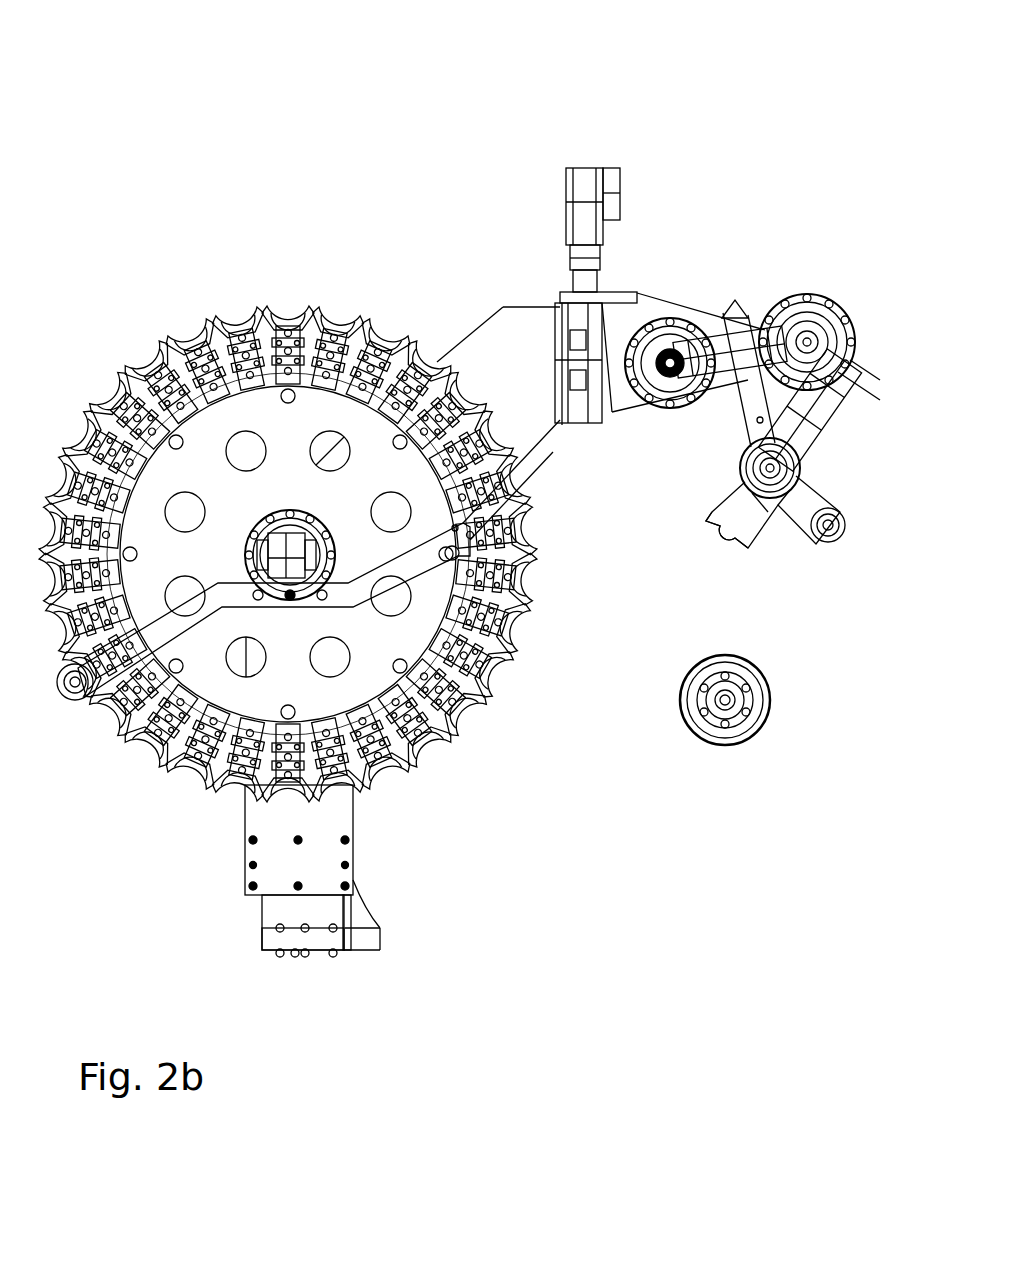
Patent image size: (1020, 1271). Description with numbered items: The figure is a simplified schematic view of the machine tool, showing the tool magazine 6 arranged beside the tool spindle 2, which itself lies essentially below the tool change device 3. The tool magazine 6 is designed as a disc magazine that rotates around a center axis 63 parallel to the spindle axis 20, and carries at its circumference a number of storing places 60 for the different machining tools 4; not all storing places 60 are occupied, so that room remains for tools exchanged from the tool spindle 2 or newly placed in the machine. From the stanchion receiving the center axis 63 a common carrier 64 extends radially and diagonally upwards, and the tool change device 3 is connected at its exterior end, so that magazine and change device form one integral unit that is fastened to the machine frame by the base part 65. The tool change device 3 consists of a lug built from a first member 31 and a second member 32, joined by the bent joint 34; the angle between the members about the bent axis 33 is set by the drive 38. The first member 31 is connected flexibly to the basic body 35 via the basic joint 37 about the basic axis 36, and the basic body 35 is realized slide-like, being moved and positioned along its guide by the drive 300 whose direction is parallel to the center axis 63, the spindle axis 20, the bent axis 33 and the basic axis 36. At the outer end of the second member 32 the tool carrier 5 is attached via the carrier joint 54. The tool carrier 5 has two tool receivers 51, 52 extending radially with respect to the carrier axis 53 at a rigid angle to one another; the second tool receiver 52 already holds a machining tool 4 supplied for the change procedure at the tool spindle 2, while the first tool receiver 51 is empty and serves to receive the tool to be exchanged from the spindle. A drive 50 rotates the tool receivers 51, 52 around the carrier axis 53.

The tool spindle 2 is at (708, 770).
The tool change device 3 is at (656, 190).
The machining tool 4 is at (820, 540).
The tool carrier 5 is at (847, 448).
The tool magazine 6 is at (248, 305).
The spindle axis 20 is at (745, 668).
The drive 300 is at (583, 172).
The first member 31 is at (727, 312).
The second member 32 is at (862, 392).
The bent axis 33 is at (808, 288).
The bent joint 34 is at (836, 300).
The basic body 35 is at (648, 297).
The basic axis 36 is at (640, 425).
The basic joint 37 is at (662, 405).
The drive 38 is at (758, 332).
The drive 50 is at (845, 420).
The first tool receiver 51 is at (722, 534).
The second tool receiver 52 is at (836, 548).
The carrier axis 53 is at (740, 480).
The carrier joint 54 is at (745, 455).
The storing places 60 is at (342, 318).
The center axis 63 is at (262, 524).
The common carrier 64 is at (504, 325).
The base part 65 is at (275, 878).